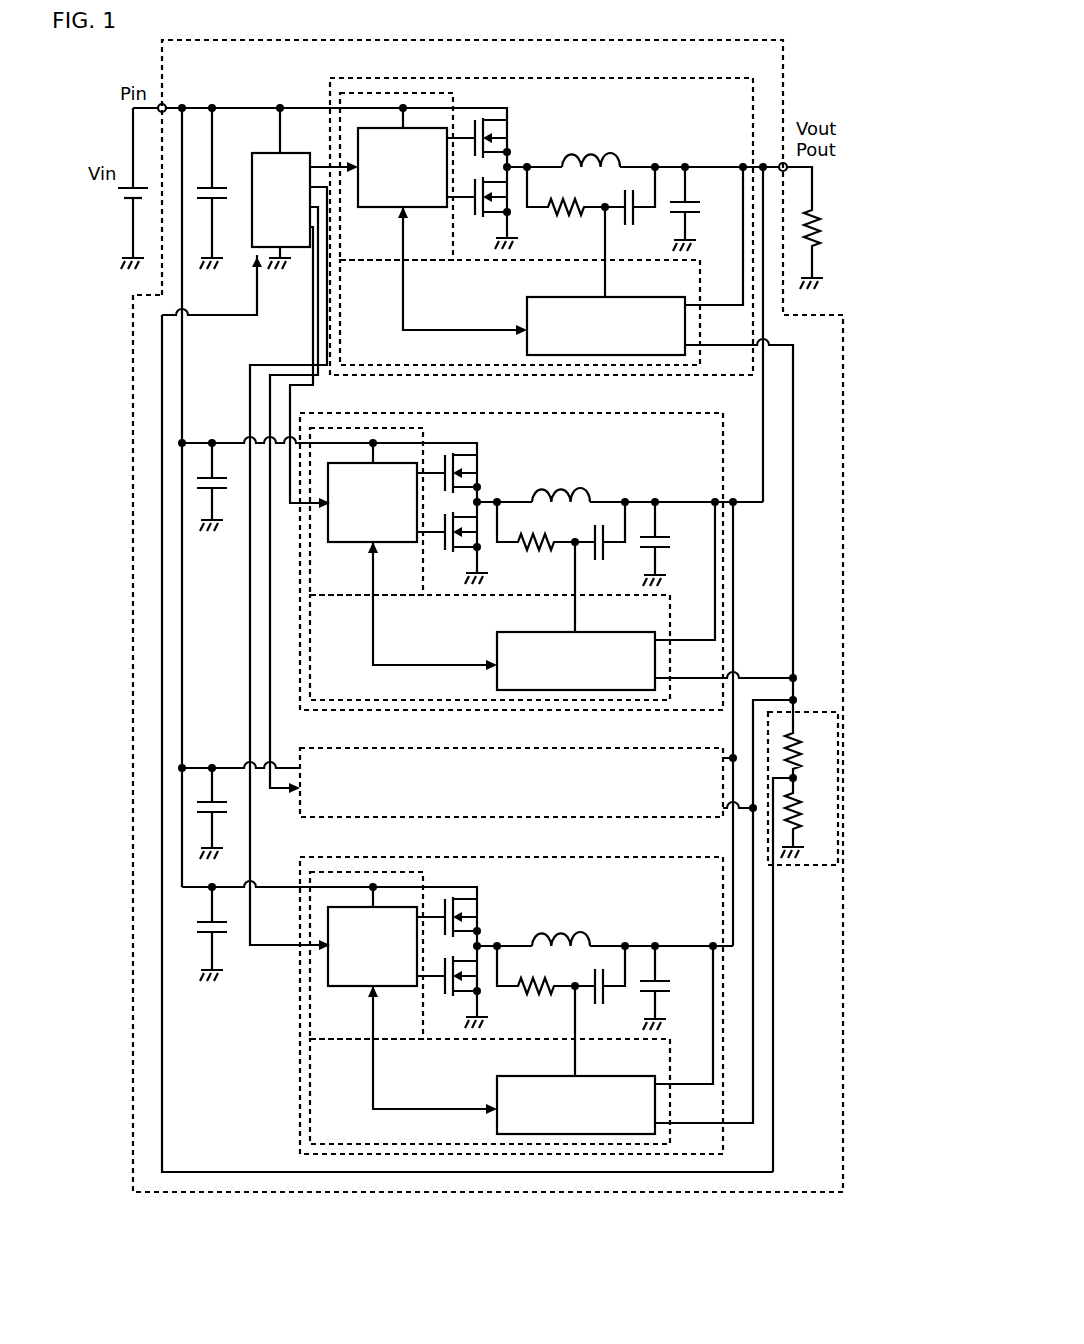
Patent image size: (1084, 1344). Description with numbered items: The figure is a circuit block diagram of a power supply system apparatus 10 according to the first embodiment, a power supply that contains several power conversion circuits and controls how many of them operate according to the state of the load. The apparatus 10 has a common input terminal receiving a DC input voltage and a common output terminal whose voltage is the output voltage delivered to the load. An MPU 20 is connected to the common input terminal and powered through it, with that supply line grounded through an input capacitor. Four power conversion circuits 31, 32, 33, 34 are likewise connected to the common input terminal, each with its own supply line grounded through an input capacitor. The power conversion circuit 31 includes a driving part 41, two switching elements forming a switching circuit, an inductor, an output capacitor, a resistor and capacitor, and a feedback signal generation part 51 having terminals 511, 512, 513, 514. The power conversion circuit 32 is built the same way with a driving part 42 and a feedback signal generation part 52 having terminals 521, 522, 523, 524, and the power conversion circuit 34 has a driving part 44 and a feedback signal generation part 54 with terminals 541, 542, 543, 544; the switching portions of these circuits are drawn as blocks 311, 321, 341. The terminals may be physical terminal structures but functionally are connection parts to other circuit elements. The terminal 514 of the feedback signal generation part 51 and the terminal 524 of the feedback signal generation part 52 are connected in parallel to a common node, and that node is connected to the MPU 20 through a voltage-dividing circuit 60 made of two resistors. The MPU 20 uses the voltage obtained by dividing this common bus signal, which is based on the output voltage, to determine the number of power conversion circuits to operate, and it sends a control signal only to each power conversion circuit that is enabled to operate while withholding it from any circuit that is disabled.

The power supply system apparatus 10 is at (783, 68).
The MPU 20 is at (268, 152).
The power conversion circuit 31 is at (708, 78).
The power conversion circuit 32 is at (511, 546).
The power conversion circuit 33 is at (664, 748).
The power conversion circuit 34 is at (511, 990).
The switching part 311 is at (455, 95).
The switching part 321 is at (390, 506).
The switching part 341 is at (390, 950).
The driving part 41 is at (380, 208).
The driving part 42 is at (369, 520).
The driving part 44 is at (369, 964).
The feedback signal generation part 51 is at (532, 297).
The feedback signal generation part 52 is at (490, 647).
The feedback signal generation part 54 is at (490, 1091).
The terminal 511 is at (686, 306).
The terminal 512 is at (603, 296).
The terminal 513 is at (515, 332).
The terminal 514 is at (686, 346).
The terminal 521 is at (687, 569).
The terminal 522 is at (538, 587).
The terminal 523 is at (432, 614).
The terminal 524 is at (656, 679).
The terminal 541 is at (686, 1013).
The terminal 542 is at (538, 1031).
The terminal 543 is at (432, 1058).
The terminal 544 is at (656, 1124).
The voltage-dividing circuit 60 is at (803, 936).